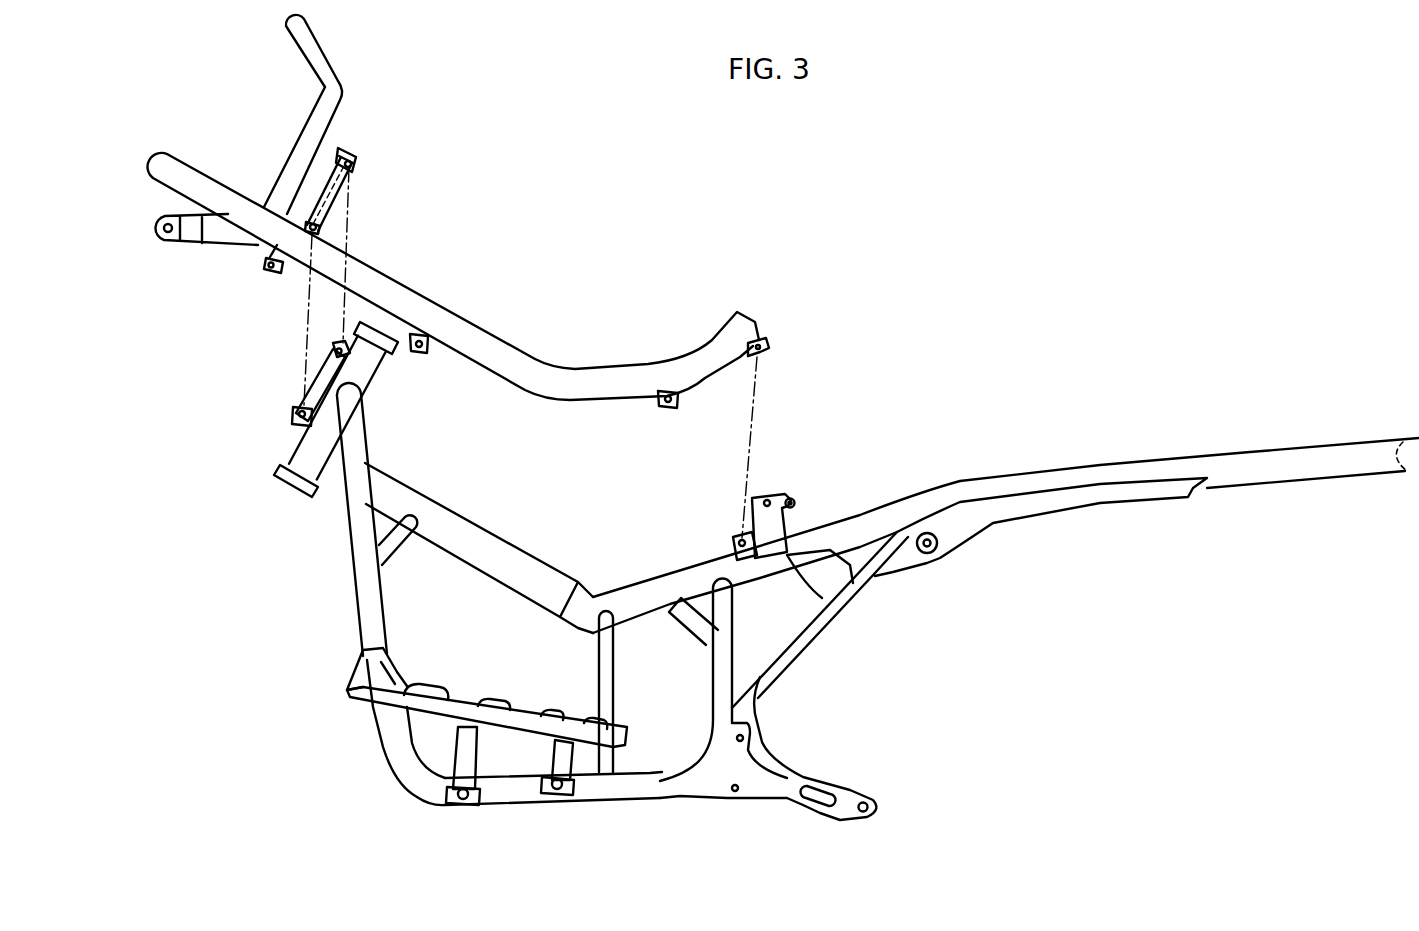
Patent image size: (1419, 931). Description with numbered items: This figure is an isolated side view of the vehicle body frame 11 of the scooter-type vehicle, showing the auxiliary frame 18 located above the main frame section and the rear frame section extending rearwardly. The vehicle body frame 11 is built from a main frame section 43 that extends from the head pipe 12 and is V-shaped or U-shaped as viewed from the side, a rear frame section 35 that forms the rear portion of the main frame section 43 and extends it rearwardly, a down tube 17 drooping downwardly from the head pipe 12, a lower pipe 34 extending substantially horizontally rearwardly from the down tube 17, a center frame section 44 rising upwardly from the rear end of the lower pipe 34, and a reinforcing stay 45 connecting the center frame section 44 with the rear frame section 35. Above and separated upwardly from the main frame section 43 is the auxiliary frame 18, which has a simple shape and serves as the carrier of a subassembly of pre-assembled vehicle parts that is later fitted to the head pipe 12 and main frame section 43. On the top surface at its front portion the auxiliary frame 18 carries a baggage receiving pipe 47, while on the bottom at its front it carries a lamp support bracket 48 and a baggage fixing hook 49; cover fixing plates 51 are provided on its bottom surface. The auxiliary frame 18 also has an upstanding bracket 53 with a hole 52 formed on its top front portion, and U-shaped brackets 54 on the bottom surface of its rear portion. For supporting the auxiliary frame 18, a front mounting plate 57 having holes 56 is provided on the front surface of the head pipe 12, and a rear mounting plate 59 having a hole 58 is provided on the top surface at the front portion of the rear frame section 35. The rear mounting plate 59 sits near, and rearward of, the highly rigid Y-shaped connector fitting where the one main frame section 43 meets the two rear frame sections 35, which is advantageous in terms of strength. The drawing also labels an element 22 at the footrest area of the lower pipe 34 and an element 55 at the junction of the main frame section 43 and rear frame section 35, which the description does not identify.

The vehicle body frame 11 is at (194, 496).
The head pipe 12 is at (362, 388).
The down tube 17 is at (370, 593).
The auxiliary frame 18 is at (397, 295).
The footrest bar 22 is at (473, 720).
The lower pipe 34 is at (650, 787).
The rear frame section 35 is at (920, 503).
The main frame section 43 is at (518, 572).
The center frame section 44 is at (723, 652).
The reinforcing stay 45 is at (797, 637).
The baggage receiving pipe 47 is at (340, 83).
The lamp support bracket 48 is at (222, 233).
The baggage fixing hook 49 is at (273, 267).
The cover fixing plates 51 is at (418, 352).
The hole 52 is at (348, 163).
The upstanding bracket 53 is at (337, 192).
The U-shaped brackets 54 is at (763, 345).
The joint portion 55 is at (591, 607).
The holes 56 is at (297, 413).
The front mounting plate 57 is at (297, 420).
The hole 58 is at (742, 543).
The rear mounting plate 59 is at (742, 540).